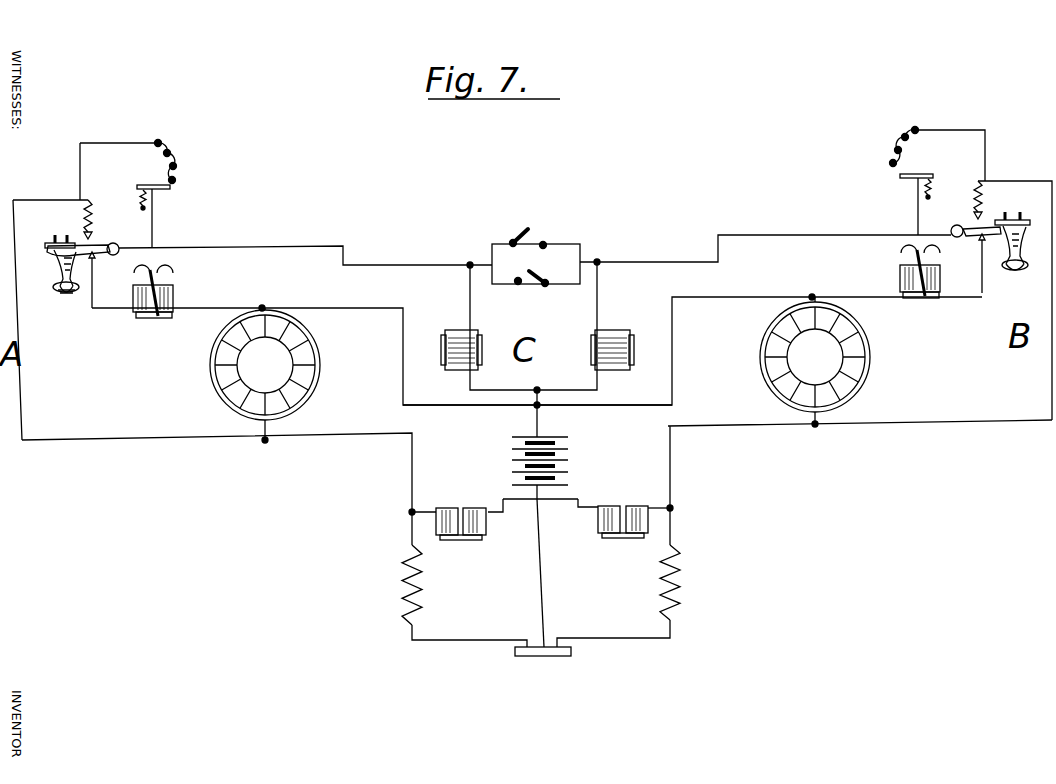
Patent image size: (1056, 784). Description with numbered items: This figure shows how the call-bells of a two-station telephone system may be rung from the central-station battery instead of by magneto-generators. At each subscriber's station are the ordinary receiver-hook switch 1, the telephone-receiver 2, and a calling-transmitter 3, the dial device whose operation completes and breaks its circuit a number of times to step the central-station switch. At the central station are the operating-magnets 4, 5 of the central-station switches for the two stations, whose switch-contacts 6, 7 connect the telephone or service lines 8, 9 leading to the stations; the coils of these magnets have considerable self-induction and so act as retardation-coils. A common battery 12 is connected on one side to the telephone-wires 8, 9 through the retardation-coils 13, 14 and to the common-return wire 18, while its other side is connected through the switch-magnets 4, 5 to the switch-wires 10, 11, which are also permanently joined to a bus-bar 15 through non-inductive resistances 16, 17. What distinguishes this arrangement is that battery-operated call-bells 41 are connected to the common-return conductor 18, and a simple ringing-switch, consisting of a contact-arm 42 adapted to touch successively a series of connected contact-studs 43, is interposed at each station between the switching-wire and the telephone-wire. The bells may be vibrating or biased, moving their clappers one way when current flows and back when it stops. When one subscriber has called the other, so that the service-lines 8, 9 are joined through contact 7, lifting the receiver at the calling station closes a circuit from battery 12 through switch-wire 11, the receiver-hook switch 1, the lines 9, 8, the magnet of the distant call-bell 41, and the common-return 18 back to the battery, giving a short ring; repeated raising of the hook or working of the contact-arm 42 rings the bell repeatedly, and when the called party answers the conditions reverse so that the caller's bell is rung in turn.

The receiver-hook switch 1 is at (524, 228).
The telephone-receiver 2 is at (531, 259).
The calling-transmitter 3 is at (540, 368).
The operating-magnet 4 is at (463, 540).
The operating-magnet 5 is at (634, 537).
The switch-contact 6 is at (529, 222).
The switch-contact 7 is at (532, 292).
The telephone line 8 is at (305, 258).
The telephone line 9 is at (765, 249).
The switch-wire 10 is at (322, 441).
The switch-wire 11 is at (862, 428).
The common battery 12 is at (562, 444).
The retardation-coil 13 is at (456, 329).
The retardation-coil 14 is at (618, 333).
The bus-bar 15 is at (543, 594).
The non-inductive resistance 16 is at (464, 596).
The non-inductive resistance 17 is at (642, 596).
The common-return wire 18 is at (556, 386).
The battery-operated call-bell 41 is at (900, 280).
The contact-arm 42 is at (898, 176).
The contact-stud 43 is at (895, 151).